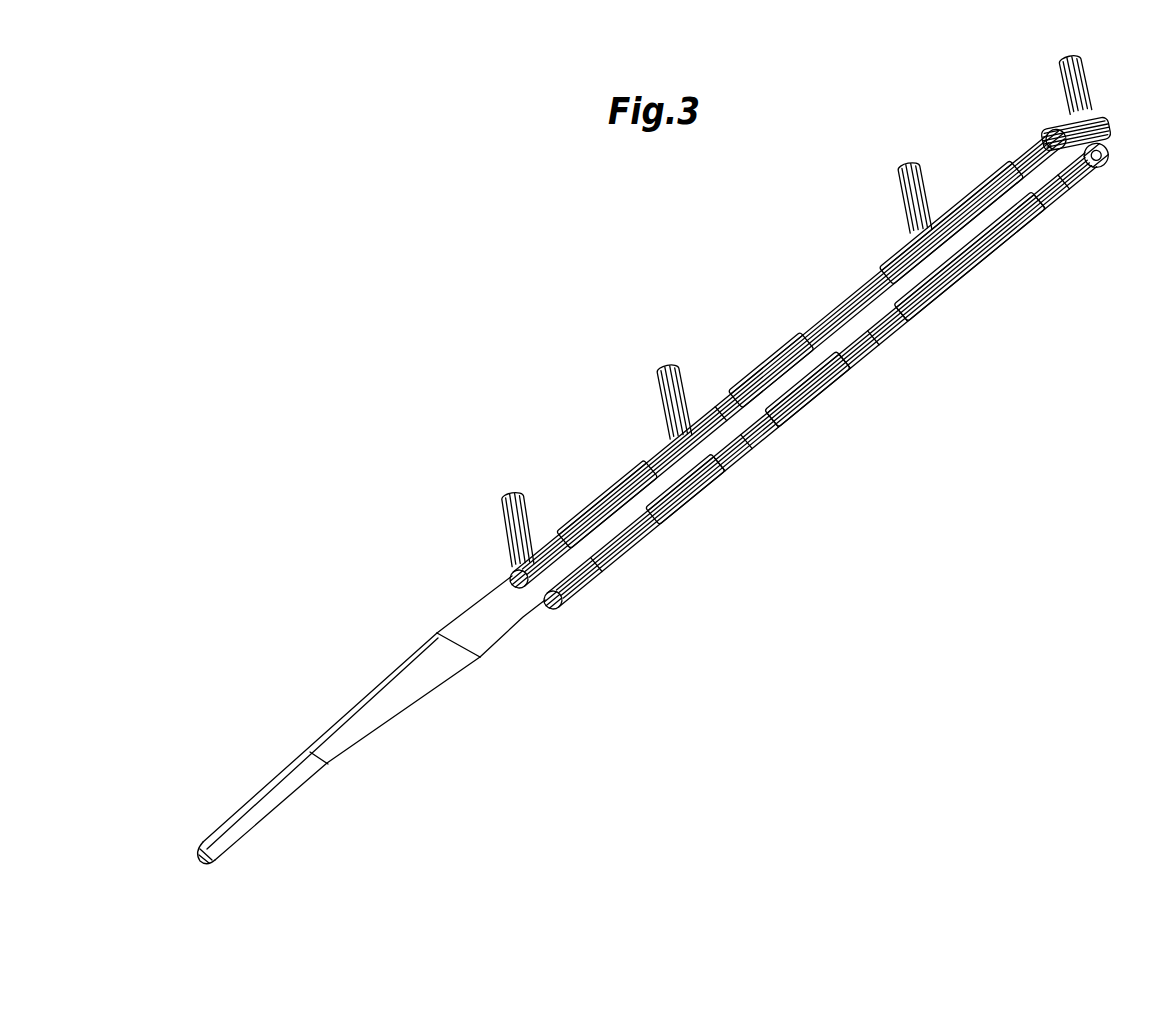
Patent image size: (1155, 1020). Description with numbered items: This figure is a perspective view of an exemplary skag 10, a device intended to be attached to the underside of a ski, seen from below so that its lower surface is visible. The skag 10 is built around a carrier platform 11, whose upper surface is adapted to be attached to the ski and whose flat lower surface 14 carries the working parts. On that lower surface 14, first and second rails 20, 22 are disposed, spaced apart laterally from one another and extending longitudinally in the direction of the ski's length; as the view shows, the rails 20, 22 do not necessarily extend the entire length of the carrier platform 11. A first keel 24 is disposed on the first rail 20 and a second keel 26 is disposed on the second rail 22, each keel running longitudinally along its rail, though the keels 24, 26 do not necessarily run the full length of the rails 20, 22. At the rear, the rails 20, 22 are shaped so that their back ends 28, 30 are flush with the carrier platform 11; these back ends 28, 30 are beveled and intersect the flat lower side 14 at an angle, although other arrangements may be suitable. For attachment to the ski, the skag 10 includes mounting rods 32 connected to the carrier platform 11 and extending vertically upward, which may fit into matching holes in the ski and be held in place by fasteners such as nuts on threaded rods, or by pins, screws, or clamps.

The skag 10 is at (563, 323).
The carrier platform 11 is at (262, 790).
The lower surface 14 is at (493, 613).
The first rail 20 is at (674, 473).
The second rail 22 is at (728, 478).
The first keel 24 is at (817, 390).
The second keel 26 is at (838, 400).
The back end of first rail 28 is at (1055, 195).
The back end of second rail 30 is at (1103, 172).
The mounting rods 32 is at (655, 370).